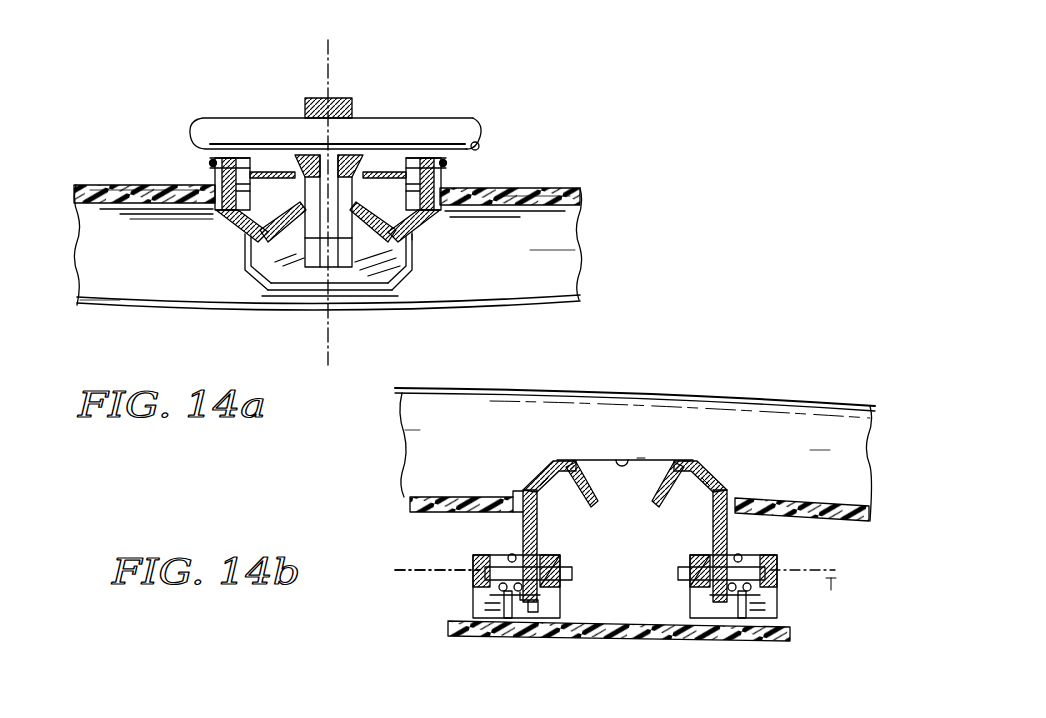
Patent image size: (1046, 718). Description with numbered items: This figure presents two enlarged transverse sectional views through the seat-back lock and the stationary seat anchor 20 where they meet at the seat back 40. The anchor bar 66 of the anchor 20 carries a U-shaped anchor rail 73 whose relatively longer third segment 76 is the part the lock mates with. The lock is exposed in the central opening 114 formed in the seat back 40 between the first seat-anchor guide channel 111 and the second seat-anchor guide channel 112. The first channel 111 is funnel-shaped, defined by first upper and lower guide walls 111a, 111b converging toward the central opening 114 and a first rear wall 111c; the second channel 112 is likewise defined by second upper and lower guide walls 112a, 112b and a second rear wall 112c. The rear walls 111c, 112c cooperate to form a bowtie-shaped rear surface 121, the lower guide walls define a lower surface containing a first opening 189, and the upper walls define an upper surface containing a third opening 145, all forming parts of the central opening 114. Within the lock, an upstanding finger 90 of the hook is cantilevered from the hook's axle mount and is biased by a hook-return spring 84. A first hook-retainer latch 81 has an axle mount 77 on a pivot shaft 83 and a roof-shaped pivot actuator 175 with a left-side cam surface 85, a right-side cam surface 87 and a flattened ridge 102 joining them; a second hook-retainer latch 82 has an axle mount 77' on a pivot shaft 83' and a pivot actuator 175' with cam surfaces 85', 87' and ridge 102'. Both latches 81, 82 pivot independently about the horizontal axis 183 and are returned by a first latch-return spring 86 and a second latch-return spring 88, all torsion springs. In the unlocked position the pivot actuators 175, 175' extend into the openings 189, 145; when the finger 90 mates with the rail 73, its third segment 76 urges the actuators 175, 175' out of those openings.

In FIG. 14A, the stationary seat anchor 20 is at (466, 110).
In FIG. 14B, the seat back 40 is at (444, 628).
In FIG. 14A, the anchor bar 66 is at (468, 130).
In FIG. 14A, the U-shaped anchor rail 73 is at (238, 114).
In FIG. 14A, the third segment 76 is at (382, 131).
In FIG. 14B, the axle mount 77 is at (702, 627).
In FIG. 14B, the axle mount 77' is at (497, 627).
In FIG. 14A, the first hook-retainer latch 81 is at (450, 178).
In FIG. 14B, the first hook-retainer latch 81 is at (730, 536).
In FIG. 14A, the second hook-retainer latch 82 is at (211, 176).
In FIG. 14B, the second hook-retainer latch 82 is at (520, 524).
In FIG. 14B, the pivot shaft 83 is at (694, 579).
In FIG. 14B, the pivot shaft 83' is at (546, 584).
In FIG. 14A, the hook-return spring 84 is at (456, 164).
In FIG. 14A, the left-side cam surface 85 is at (378, 212).
In FIG. 14B, the left-side cam surface 85 is at (663, 465).
In FIG. 14A, the left-side cam surface 85' is at (232, 237).
In FIG. 14B, the left-side cam surface 85' is at (515, 471).
In FIG. 14B, the first latch-return spring 86 is at (755, 606).
In FIG. 14A, the right-side cam surface 87 is at (435, 231).
In FIG. 14B, the right-side cam surface 87 is at (717, 470).
In FIG. 14A, the right-side cam surface 87' is at (283, 212).
In FIG. 14B, the right-side cam surface 87' is at (594, 464).
In FIG. 14B, the second latch-return spring 88 is at (496, 598).
In FIG. 14A, the finger 90 is at (298, 293).
In FIG. 14A, the ridge 102 is at (382, 288).
In FIG. 14B, the ridge 102 is at (705, 411).
In FIG. 14A, the ridge 102' is at (225, 287).
In FIG. 14B, the ridge 102' is at (553, 438).
In FIG. 14A, the first seat-anchor guide channel 111 is at (540, 303).
In FIG. 14B, the first seat-anchor guide channel 111 is at (776, 424).
In FIG. 14B, the first upper guide wall 111a is at (820, 448).
In FIG. 14A, the first lower guide wall 111b is at (562, 255).
In FIG. 14A, the first rear wall 111c is at (560, 190).
In FIG. 14B, the first rear wall 111c is at (818, 520).
In FIG. 14A, the second seat-anchor guide channel 112 is at (158, 283).
In FIG. 14B, the second seat-anchor guide channel 112 is at (461, 423).
In FIG. 14B, the second upper guide wall 112a is at (415, 430).
In FIG. 14A, the second lower guide wall 112b is at (103, 298).
In FIG. 14A, the second rear wall 112c is at (104, 190).
In FIG. 14B, the second rear wall 112c is at (435, 502).
In FIG. 14A, the central opening 114 is at (340, 291).
In FIG. 14B, the central opening 114 is at (641, 458).
In FIG. 14A, the rear surface 121 is at (556, 212).
In FIG. 14B, the rear surface 121 is at (414, 509).
In FIG. 14A, the third opening 145 is at (250, 182).
In FIG. 14A, the pivot actuator 175 is at (451, 258).
In FIG. 14B, the pivot actuator 175 is at (734, 412).
In FIG. 14A, the pivot actuator 175' is at (165, 235).
In FIG. 14B, the pivot actuator 175' is at (516, 417).
In FIG. 14B, the horizontal axis 183 is at (388, 565).
In FIG. 14B, the first opening 189 is at (614, 497).